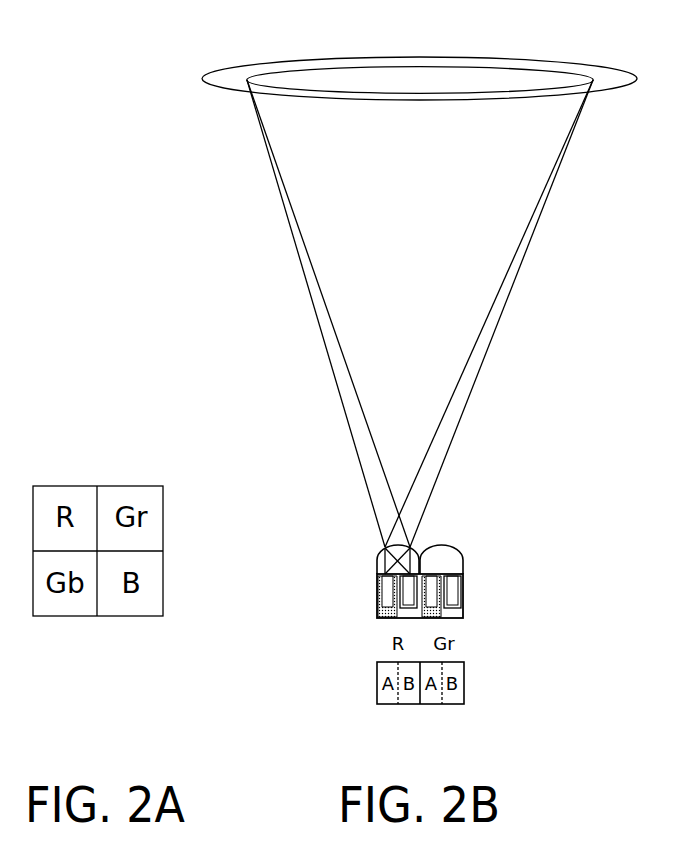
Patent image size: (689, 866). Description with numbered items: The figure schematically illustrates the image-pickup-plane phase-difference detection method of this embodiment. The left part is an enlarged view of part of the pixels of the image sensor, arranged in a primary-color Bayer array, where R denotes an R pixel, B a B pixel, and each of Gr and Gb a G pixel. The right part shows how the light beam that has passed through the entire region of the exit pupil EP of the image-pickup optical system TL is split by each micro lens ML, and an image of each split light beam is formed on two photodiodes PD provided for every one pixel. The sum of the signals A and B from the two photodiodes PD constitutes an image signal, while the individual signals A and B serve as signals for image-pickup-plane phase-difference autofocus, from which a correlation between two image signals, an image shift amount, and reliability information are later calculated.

The image-pickup optical system TL is at (220, 70).
The exit pupil EP is at (313, 68).
The micro lens ML is at (463, 558).
The photodiode PD is at (387, 602).